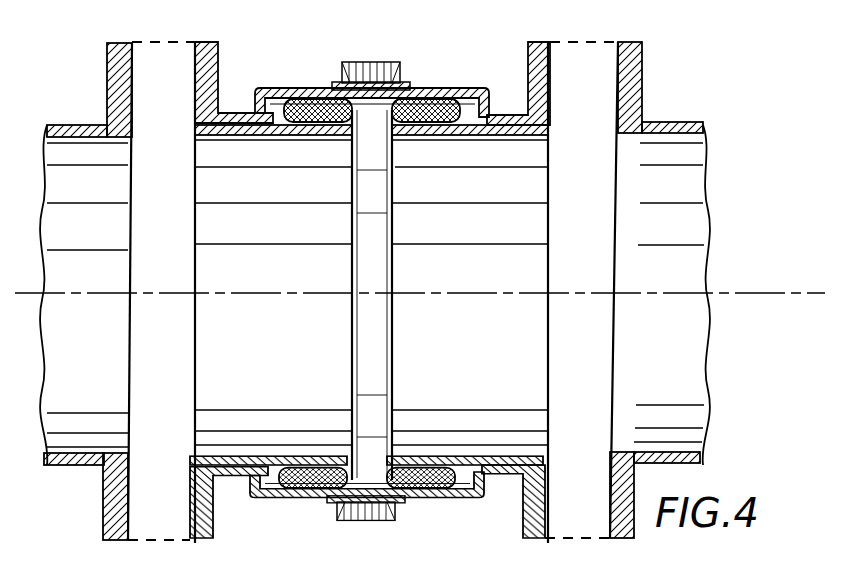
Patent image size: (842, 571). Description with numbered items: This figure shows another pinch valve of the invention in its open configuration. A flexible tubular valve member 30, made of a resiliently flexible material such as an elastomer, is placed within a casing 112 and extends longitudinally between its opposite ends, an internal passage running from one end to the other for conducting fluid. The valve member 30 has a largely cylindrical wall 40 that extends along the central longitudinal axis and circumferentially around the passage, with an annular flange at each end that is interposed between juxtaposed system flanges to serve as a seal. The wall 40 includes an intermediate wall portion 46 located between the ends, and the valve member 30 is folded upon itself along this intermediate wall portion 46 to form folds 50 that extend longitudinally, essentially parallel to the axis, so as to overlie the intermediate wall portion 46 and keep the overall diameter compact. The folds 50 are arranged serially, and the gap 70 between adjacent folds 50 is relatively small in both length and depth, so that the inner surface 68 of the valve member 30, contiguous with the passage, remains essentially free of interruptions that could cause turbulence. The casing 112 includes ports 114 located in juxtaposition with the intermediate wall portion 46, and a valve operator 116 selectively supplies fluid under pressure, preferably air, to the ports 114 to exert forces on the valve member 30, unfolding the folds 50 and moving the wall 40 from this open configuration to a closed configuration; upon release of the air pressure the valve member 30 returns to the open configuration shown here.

The flexible tubular valve member 30 is at (188, 349).
The wall 40 is at (213, 450).
The intermediate wall portion 46 is at (352, 172).
The folds 50 is at (270, 127).
The inner surface 68 is at (504, 140).
The gap 70 is at (372, 343).
The casing 112 is at (274, 90).
The ports 114 is at (386, 76).
The valve operator 116 is at (343, 87).